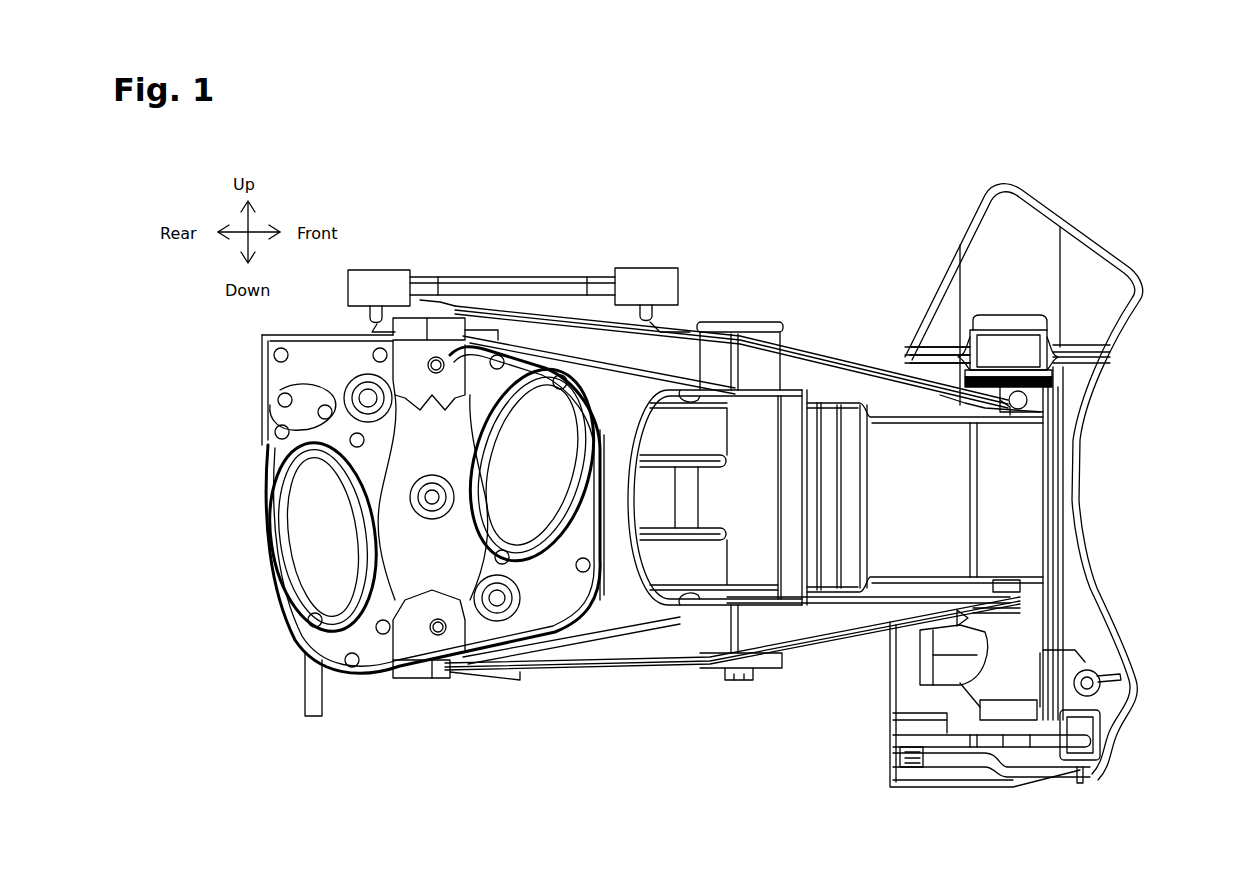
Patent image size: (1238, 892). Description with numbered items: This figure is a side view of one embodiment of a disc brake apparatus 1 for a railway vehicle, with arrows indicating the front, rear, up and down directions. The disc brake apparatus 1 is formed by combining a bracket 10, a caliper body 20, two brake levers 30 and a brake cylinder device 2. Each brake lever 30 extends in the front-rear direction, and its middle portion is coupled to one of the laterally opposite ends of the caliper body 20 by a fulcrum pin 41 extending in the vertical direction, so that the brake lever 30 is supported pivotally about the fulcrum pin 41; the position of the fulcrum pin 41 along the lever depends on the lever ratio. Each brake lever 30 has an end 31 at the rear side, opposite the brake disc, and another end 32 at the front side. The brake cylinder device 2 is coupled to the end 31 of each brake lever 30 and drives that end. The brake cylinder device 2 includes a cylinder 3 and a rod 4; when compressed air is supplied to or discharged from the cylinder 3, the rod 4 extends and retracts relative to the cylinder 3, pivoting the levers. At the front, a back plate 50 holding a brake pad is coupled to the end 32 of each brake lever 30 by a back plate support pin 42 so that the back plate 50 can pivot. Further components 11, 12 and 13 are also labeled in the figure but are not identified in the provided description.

The disc brake apparatus 1 is at (636, 716).
The brake cylinder device 2 is at (268, 623).
The cylinder 3 is at (262, 528).
The rod 4 is at (390, 502).
The bracket 10 is at (686, 243).
The stabilizer assembly 11 is at (525, 249).
The rod 12 is at (478, 275).
The rod end block 13 is at (372, 270).
The caliper body 20 is at (755, 527).
The brake lever 30 is at (813, 352).
The end 31 is at (464, 325).
The end 32 is at (948, 400).
The fulcrum pin 41 is at (743, 311).
The back plate support pin 42 is at (1013, 325).
The back plate 50 is at (1095, 270).